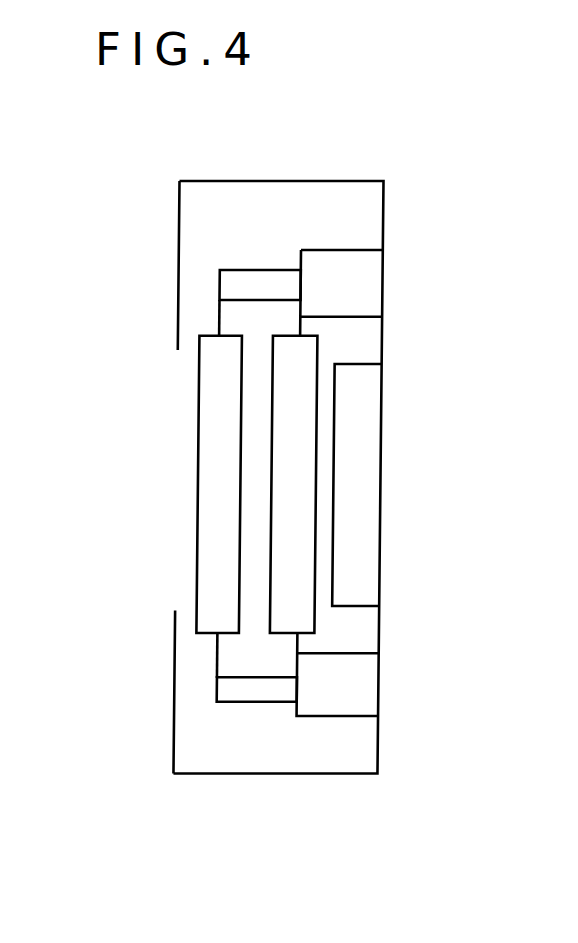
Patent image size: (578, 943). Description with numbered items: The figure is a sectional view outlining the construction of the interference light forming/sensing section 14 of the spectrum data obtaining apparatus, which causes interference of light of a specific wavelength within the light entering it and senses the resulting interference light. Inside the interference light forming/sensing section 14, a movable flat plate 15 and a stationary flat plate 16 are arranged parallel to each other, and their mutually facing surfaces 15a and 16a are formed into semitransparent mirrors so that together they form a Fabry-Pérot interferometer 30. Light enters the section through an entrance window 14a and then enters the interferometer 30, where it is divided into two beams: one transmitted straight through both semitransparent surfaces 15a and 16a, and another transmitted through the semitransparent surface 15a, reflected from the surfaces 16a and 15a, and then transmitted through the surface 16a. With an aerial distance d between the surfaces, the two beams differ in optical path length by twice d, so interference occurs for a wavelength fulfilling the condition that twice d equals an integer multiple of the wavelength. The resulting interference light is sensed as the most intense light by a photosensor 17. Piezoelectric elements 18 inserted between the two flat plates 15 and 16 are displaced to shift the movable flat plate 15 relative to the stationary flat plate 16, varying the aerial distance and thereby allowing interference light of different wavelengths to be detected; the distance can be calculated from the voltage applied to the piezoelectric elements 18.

The interference light forming/sensing section 14 is at (422, 212).
The entrance window 14a is at (170, 508).
The movable flat plate 15 is at (228, 617).
The semitransparent surface of movable flat plate 15a is at (242, 407).
The stationary flat plate 16 is at (305, 618).
The semitransparent surface of stationary flat plate 16a is at (275, 355).
The photosensor 17 is at (355, 482).
The piezoelectric elements 18 is at (262, 277).
The Fabry-Pérot interferometer 30 is at (350, 833).